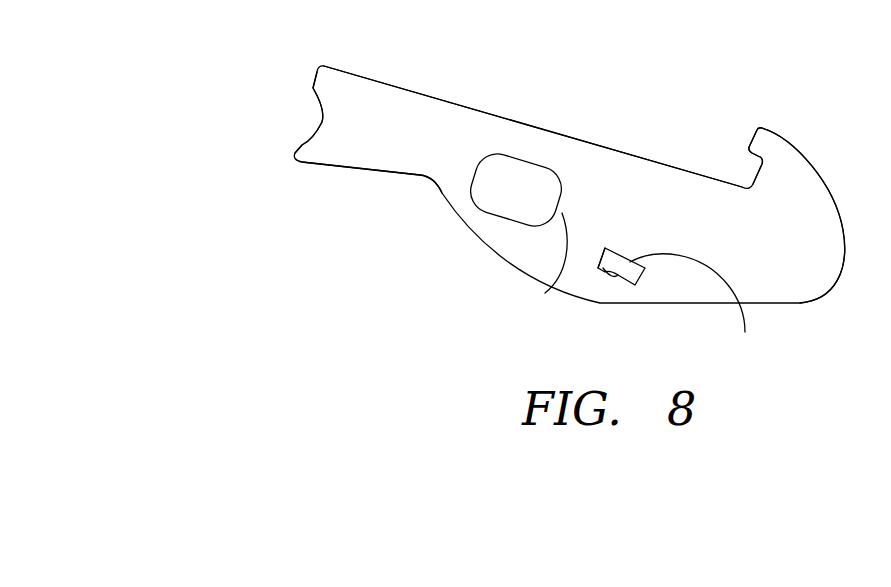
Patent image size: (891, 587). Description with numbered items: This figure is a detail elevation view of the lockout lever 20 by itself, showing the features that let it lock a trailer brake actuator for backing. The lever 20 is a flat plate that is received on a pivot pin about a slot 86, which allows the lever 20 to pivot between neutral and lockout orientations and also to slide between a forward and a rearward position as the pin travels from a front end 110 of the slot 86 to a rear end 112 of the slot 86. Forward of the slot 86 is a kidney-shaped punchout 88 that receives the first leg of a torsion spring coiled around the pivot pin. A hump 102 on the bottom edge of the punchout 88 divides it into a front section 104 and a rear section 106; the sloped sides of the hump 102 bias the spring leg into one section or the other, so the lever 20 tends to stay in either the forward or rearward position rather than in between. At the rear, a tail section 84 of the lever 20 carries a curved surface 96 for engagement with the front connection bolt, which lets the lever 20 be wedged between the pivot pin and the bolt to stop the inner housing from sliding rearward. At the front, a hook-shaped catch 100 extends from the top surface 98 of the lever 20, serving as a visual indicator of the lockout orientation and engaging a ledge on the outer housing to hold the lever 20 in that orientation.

The lockout lever 20 is at (420, 92).
The tail section 84 is at (393, 175).
The slot 86 is at (528, 160).
The kidney-shaped punchout 88 is at (626, 257).
The curved surface 96 is at (320, 122).
The top surface 98 is at (602, 147).
The hook-shaped catch 100 is at (752, 135).
The hump 102 is at (701, 307).
The front section 104 is at (628, 290).
The rear section 106 is at (607, 275).
The front end 110 is at (545, 293).
The rear end 112 is at (468, 170).